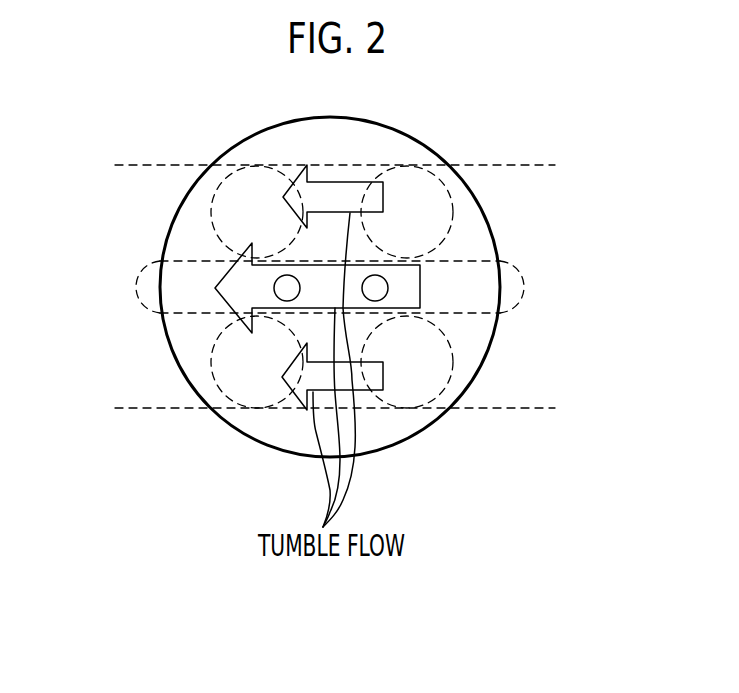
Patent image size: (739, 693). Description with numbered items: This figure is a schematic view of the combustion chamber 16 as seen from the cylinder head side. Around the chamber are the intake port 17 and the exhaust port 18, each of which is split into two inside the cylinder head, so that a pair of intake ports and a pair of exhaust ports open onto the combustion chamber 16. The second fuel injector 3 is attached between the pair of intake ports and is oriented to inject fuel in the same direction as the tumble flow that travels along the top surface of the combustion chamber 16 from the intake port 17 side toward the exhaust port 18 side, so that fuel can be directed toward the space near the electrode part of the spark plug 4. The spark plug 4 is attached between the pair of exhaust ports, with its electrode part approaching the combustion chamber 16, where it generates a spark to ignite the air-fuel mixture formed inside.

The combustion chamber 16 is at (352, 121).
The intake port 17 is at (453, 260).
The exhaust port 18 is at (208, 260).
The second fuel injector 3 is at (387, 283).
The spark plug 4 is at (300, 288).